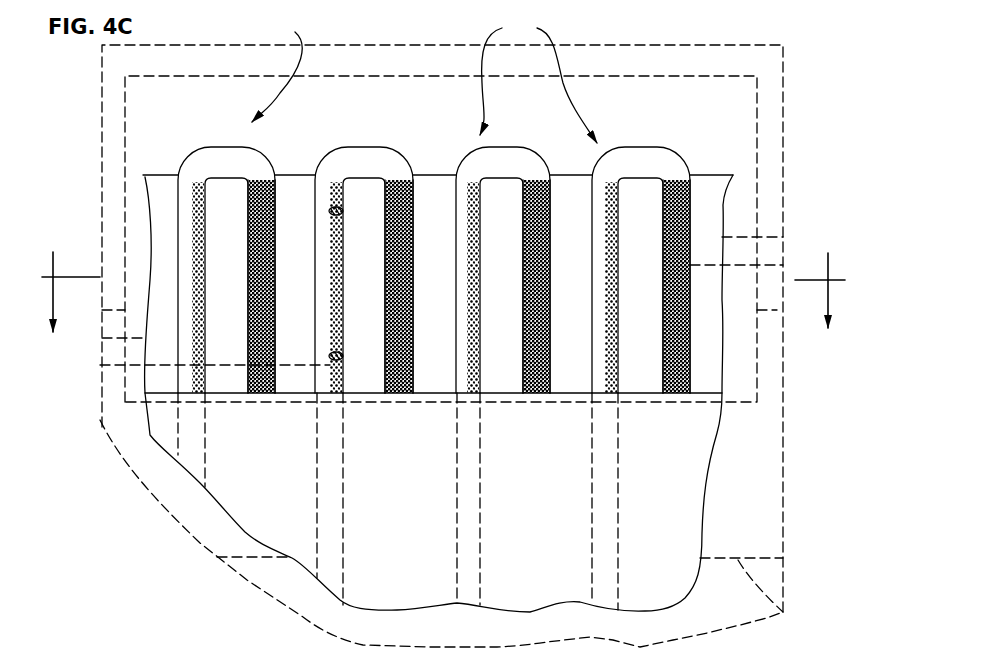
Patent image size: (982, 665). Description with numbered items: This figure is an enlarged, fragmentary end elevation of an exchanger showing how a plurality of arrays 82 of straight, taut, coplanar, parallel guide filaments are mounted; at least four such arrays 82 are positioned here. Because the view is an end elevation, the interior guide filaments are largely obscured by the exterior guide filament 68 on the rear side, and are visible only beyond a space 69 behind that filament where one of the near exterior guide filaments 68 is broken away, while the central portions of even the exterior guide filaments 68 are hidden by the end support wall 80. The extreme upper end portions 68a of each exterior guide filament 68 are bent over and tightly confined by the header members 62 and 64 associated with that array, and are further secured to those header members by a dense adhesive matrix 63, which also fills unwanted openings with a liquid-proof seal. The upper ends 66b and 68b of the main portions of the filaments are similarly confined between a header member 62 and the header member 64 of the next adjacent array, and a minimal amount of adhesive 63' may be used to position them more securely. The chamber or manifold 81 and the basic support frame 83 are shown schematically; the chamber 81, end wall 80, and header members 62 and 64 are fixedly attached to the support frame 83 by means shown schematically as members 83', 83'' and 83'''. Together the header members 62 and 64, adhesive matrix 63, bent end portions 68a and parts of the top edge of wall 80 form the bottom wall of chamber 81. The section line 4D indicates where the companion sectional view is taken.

The end support wall 80 is at (548, 545).
The chamber or manifold 81 is at (130, 100).
The array of guide filaments 82 is at (424, 81).
The basic support frame 83 is at (468, 333).
The attachment member 83' is at (446, 310).
The attachment member 83'' is at (491, 601).
The attachment member 83''' is at (453, 309).
The header member 62 is at (187, 147).
The dense adhesive matrix 63 is at (482, 329).
The adhesive 63' is at (417, 277).
The header member 64 is at (292, 398).
The upper end of main portion of interior guide filament 66b is at (220, 193).
The exterior guide filament 68 is at (207, 467).
The extreme upper end portion of exterior guide filament 68a is at (395, 207).
The upper end of main portion of exterior guide filament 68b is at (187, 194).
The space 69 is at (322, 216).
The section line 4D is at (444, 305).